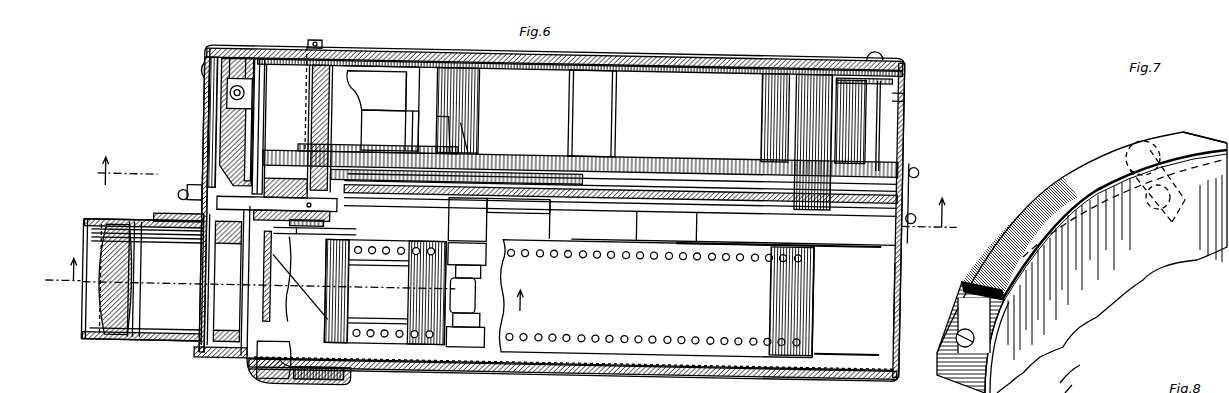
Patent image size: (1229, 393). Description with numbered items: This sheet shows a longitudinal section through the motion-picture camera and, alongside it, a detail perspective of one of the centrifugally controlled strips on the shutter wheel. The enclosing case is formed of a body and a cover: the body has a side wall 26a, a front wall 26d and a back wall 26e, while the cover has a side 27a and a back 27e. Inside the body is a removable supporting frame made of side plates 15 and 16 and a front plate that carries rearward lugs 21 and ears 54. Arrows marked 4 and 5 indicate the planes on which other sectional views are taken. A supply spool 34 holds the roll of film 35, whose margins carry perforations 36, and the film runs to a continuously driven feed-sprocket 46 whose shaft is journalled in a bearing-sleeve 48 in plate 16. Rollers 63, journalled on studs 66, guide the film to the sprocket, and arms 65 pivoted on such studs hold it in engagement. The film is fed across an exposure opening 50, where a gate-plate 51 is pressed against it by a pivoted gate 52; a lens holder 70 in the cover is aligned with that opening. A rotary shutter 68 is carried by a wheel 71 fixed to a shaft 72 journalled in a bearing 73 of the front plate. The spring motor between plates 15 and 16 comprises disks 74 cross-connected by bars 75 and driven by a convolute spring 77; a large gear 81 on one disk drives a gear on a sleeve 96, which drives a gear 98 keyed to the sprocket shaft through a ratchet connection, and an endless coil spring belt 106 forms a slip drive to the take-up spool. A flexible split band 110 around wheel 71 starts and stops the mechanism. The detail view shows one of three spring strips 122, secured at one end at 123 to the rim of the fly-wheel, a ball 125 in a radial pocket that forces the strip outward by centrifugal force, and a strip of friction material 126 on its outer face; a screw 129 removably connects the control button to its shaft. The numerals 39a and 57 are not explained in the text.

In FIG. 6, the section line 4— 4 is at (526, 192).
In FIG. 6, the section line 5— 5 is at (293, 284).
In FIG. 6, the side plate 15 is at (840, 196).
In FIG. 6, the side plate 16 is at (735, 58).
In FIG. 7, the lug 21 is at (1090, 379).
In FIG. 6, the side wall 26a is at (770, 52).
In FIG. 6, the front wall 26d is at (206, 108).
In FIG. 7, the front wall 26d is at (1082, 242).
In FIG. 6, the back wall 26e is at (908, 118).
In FIG. 6, the side of cover 27a is at (850, 364).
In FIG. 6, the back of cover 27e is at (900, 287).
In FIG. 6, the supply spool 34 is at (840, 238).
In FIG. 6, the film 35 is at (656, 299).
In FIG. 6, the perforations 36 is at (745, 251).
In FIG. 6, the guide rail 39a is at (580, 232).
In FIG. 6, the feed-sprocket 46 is at (385, 291).
In FIG. 6, the bearing-sleeve 48 is at (381, 88).
In FIG. 6, the exposure opening 50 is at (258, 302).
In FIG. 6, the gate-plate 51 is at (292, 328).
In FIG. 6, the gate 52 is at (290, 300).
In FIG. 7, the ears 54 is at (1075, 364).
In FIG. 6, the lever 57 is at (280, 270).
In FIG. 6, the rollers 63 is at (480, 342).
In FIG. 6, the arm 65 is at (482, 300).
In FIG. 6, the stud 66 is at (485, 268).
In FIG. 6, the rotary shutter 68 is at (222, 150).
In FIG. 6, the photographic holder 70 is at (190, 338).
In FIG. 6, the wheel 71 is at (212, 128).
In FIG. 7, the wheel 71 is at (1112, 268).
In FIG. 6, the shutter shaft 72 is at (203, 168).
In FIG. 6, the bearing 73 is at (275, 180).
In FIG. 6, the disks 74 is at (880, 46).
In FIG. 6, the bars 75 is at (592, 113).
In FIG. 6, the convolute spring 77 is at (272, 85).
In FIG. 6, the large gear 81 is at (670, 160).
In FIG. 6, the sleeve 96 is at (390, 110).
In FIG. 6, the gear 98 is at (505, 150).
In FIG. 6, the endless coil spring belt 106 is at (520, 167).
In FIG. 6, the flexible split band 110 is at (225, 360).
In FIG. 7, the spring strips 122 is at (1000, 310).
In FIG. 7, the securing point of strip 123 is at (960, 330).
In FIG. 6, the ball 125 is at (240, 85).
In FIG. 7, the ball 125 is at (1168, 208).
In FIG. 6, the friction material 126 is at (236, 84).
In FIG. 7, the friction material 126 is at (1163, 137).
In FIG. 7, the screw 129 is at (1175, 172).